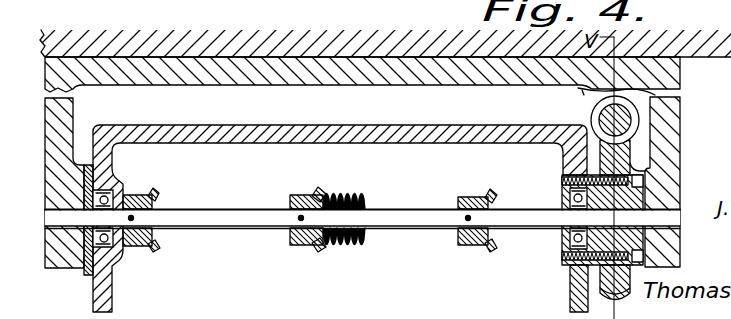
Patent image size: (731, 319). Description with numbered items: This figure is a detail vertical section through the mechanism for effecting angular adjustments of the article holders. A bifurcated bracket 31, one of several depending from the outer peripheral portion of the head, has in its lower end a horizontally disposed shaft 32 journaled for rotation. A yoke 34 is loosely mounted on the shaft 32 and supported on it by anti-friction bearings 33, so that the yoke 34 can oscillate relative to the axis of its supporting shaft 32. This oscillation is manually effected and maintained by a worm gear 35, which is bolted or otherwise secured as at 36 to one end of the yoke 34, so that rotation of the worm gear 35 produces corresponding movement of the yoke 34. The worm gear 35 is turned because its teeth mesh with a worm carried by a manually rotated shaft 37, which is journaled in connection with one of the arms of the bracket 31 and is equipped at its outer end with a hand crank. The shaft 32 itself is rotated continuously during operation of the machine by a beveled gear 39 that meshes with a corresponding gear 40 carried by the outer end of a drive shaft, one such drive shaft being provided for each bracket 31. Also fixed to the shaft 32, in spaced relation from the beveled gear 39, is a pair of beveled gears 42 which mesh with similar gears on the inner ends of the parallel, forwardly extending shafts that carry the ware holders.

The bifurcated bracket 31 is at (680, 70).
The shaft 32 is at (676, 212).
The anti-friction bearings 33 is at (117, 193).
The yoke 34 is at (444, 127).
The worm gear 35 is at (632, 155).
The securing means (bolts) 36 is at (600, 112).
The manually rotated shaft 37 is at (630, 118).
The beveled gear 39 is at (300, 247).
The gear 40 is at (350, 194).
The pair of beveled gears 42 is at (152, 197).